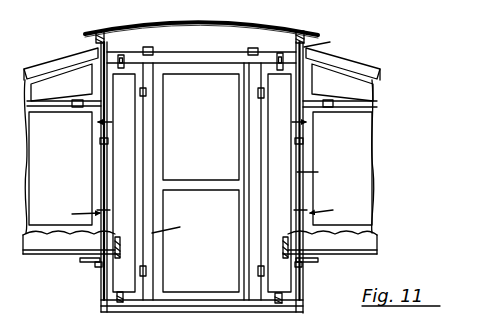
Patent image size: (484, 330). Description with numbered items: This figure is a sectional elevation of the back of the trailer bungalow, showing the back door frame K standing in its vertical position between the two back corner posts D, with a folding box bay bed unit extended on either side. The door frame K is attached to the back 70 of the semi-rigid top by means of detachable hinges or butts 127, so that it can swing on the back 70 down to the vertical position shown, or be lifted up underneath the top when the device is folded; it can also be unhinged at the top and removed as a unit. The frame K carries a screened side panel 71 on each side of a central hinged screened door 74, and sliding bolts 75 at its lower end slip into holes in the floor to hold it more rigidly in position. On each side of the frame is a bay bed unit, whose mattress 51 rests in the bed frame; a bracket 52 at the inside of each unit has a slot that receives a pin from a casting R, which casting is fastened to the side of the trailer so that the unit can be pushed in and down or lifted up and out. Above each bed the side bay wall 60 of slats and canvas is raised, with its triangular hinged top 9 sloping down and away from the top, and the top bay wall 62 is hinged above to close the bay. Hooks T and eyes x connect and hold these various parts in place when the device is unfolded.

The top of wall 9 is at (202, 82).
The mattress 51 is at (200, 244).
The bracket 52 is at (312, 267).
The side bay wall 60 is at (200, 168).
The top bay wall 62 is at (58, 67).
The back of the top 70 is at (201, 42).
The screened side panel 71 is at (202, 183).
The hinged screened door 74 is at (201, 183).
The sliding bolt 75 is at (286, 298).
The detachable hinge 127 is at (253, 48).
The hook T is at (74, 193).
The eye x is at (202, 212).
The extensible corner post D is at (312, 172).
The back door frame K is at (171, 227).
The casting R is at (97, 264).